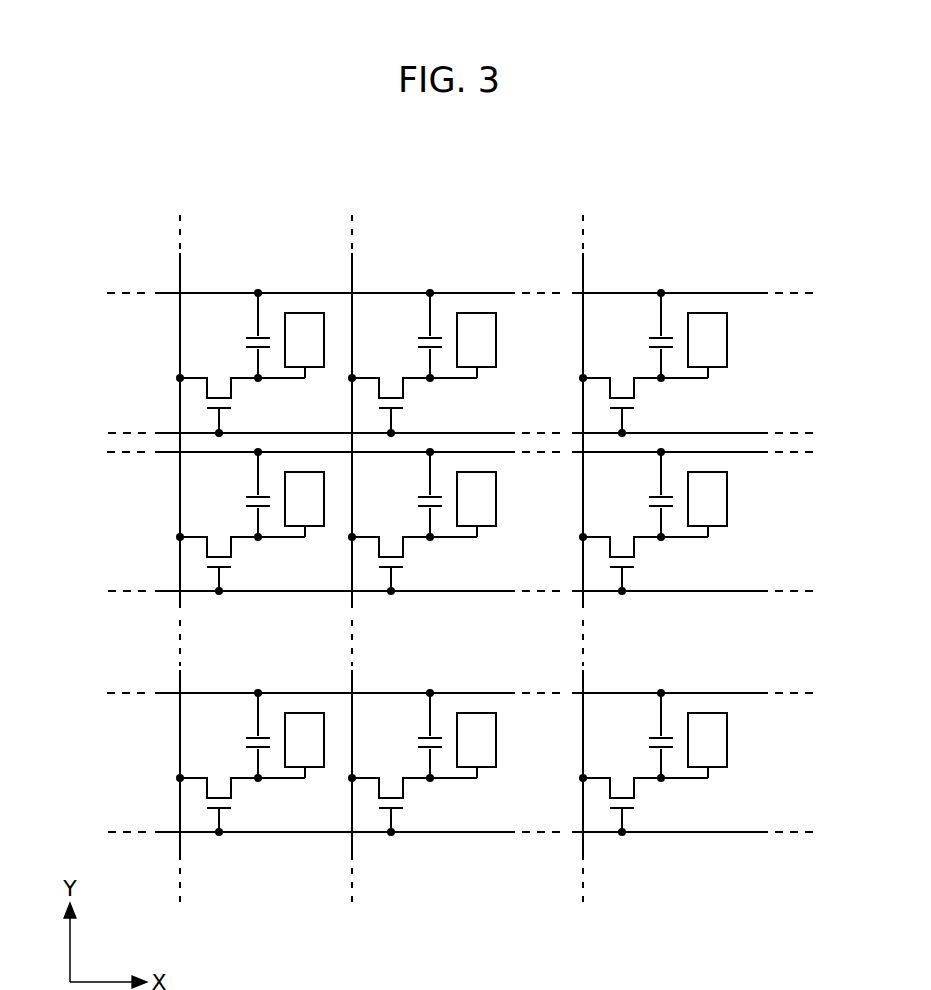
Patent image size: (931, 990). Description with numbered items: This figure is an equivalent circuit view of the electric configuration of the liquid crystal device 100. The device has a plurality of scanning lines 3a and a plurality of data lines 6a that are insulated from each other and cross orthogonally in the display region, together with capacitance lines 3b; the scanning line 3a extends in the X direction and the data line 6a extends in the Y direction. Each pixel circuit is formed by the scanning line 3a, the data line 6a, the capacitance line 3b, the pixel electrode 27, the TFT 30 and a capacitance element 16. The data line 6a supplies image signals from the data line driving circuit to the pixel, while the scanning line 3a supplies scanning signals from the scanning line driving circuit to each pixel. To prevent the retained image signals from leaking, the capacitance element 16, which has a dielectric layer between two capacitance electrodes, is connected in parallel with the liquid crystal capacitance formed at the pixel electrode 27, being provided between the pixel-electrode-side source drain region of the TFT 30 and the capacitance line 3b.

The liquid crystal device 100 is at (720, 198).
The data line 6a is at (183, 267).
The capacitance line 3b is at (749, 298).
The scanning line 3a is at (755, 432).
The capacitance element 16 is at (242, 338).
The pixel electrode 27 is at (706, 326).
The TFT 30 is at (240, 406).